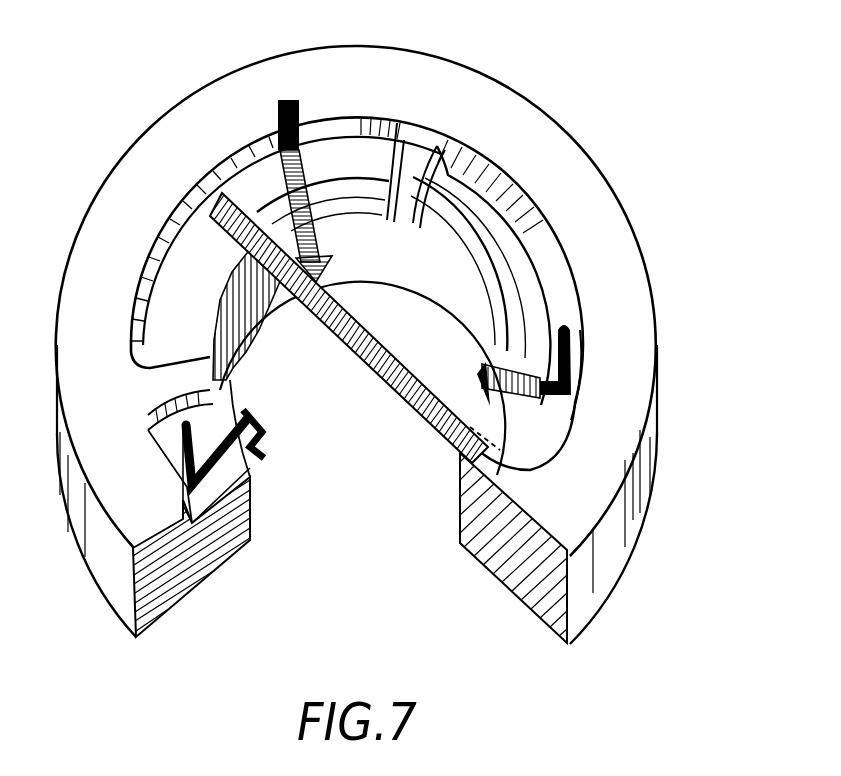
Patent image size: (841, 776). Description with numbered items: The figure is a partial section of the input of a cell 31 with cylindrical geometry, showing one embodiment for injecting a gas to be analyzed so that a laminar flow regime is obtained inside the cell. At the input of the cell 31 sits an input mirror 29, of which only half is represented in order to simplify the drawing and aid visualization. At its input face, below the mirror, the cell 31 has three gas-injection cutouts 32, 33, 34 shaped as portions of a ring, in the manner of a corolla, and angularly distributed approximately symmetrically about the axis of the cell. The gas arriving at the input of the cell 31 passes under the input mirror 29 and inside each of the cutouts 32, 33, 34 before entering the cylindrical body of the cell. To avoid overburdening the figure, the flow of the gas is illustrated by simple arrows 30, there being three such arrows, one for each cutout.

The input mirror 29 is at (423, 423).
The arrows 30 is at (288, 93).
The cell 31 is at (605, 556).
The gas-injection cutout 32 is at (198, 253).
The gas-injection cutout 33 is at (558, 298).
The gas-injection cutout 34 is at (250, 468).